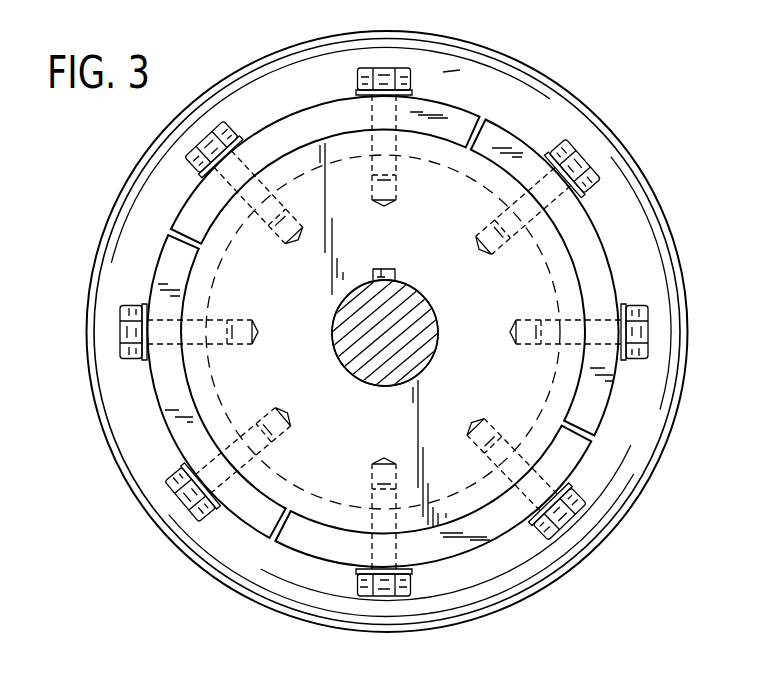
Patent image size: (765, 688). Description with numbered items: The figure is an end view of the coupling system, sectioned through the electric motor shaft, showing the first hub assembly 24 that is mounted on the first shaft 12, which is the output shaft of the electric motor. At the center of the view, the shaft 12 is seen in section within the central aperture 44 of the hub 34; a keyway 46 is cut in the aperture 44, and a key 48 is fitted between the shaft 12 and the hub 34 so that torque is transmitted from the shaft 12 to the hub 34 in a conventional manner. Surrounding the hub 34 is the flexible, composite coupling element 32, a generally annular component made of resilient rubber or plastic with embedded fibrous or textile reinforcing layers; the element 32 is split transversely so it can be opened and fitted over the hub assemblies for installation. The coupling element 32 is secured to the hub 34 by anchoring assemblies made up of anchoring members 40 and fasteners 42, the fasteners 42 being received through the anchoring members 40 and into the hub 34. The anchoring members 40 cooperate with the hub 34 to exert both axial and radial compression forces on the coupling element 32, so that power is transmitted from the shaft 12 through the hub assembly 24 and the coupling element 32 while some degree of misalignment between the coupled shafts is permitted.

The first shaft 12 is at (350, 345).
The first hub assembly 24 is at (369, 318).
The coupling element 32 is at (568, 108).
The hub 34 is at (535, 267).
The anchoring members 40 is at (318, 117).
The fasteners 42 is at (383, 90).
The central aperture 44 is at (353, 384).
The keyway 46 is at (380, 268).
The key 48 is at (394, 269).